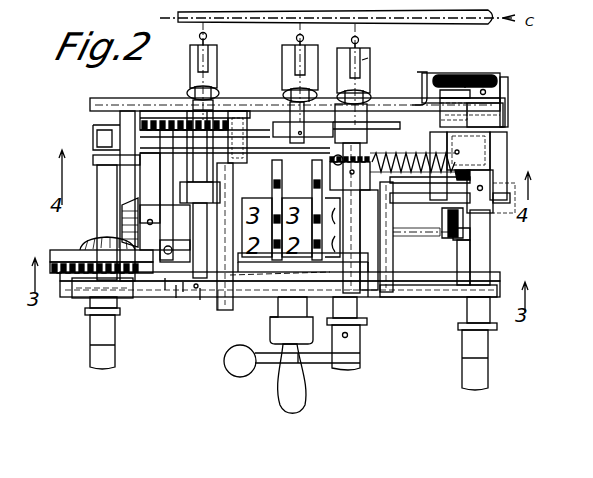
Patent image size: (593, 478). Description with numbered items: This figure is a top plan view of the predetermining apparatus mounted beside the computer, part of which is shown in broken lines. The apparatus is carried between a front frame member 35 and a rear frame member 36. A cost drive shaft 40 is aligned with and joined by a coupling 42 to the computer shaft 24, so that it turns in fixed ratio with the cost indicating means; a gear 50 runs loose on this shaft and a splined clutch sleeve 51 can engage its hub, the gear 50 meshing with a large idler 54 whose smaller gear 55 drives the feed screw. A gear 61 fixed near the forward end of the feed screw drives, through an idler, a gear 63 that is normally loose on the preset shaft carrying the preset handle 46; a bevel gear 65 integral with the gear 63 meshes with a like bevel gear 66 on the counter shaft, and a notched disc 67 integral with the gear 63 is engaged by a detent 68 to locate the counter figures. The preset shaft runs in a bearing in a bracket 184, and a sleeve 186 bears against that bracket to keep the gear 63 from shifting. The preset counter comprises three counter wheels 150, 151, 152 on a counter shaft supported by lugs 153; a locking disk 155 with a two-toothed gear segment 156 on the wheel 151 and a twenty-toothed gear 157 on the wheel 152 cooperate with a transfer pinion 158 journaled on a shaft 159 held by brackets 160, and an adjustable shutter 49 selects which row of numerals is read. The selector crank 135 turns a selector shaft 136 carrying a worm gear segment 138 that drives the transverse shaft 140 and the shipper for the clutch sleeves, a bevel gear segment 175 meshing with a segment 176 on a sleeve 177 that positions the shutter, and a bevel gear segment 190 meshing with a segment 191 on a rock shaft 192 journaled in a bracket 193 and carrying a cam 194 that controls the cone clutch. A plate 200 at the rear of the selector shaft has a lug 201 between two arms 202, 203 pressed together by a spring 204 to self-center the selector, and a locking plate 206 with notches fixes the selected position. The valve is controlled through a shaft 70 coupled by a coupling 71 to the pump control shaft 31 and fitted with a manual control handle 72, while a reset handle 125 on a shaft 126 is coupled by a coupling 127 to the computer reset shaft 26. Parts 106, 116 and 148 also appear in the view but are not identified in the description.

The shaft 24 is at (207, 37).
The coupling 42 is at (222, 56).
The drive shaft 40 is at (199, 89).
The gear 50 is at (212, 118).
The reset shaft 26 is at (300, 34).
The coupling 127 is at (311, 64).
The shaft 126 is at (301, 100).
The control shaft 31 is at (355, 36).
The coupling 71 is at (365, 66).
The shaft 70 is at (366, 94).
The locking plate 206 is at (375, 128).
The lug 201 is at (446, 76).
The plate 200 is at (464, 76).
The spring 204 is at (485, 78).
The arm 202 is at (424, 96).
The arm 203 is at (504, 100).
The rear frame member 36 is at (506, 118).
The large idler 54 is at (148, 112).
The gear 55 is at (160, 118).
The rock shaft 192 is at (108, 128).
The cam 194 is at (98, 138).
The bracket 184 is at (96, 157).
The sleeve 186 is at (100, 196).
The bevel gear 66 is at (122, 218).
The bevel gear 65 is at (85, 242).
The notched disc 67 is at (63, 258).
The gear 63 is at (70, 272).
The preset handle 46 is at (92, 337).
The front frame member 35 is at (497, 302).
The selector handle 135 is at (486, 350).
The spring 116 is at (420, 160).
The shaft 159 is at (382, 183).
The transverse shaft 140 is at (434, 203).
The bevel gear segment 191 is at (456, 176).
The bracket 193 is at (445, 148).
The bevel gear segment 190 is at (470, 178).
The worm gear segment 138 is at (515, 198).
The bevel gear segment 175 is at (465, 216).
The bevel gear segment 176 is at (470, 236).
The sleeve 177 is at (437, 240).
The selector shaft 136 is at (480, 265).
The transfer pinion 158 is at (286, 132).
The spring seat 106 is at (300, 160).
The twenty-toothed gear 157 is at (262, 196).
The clutch sleeve 51 is at (213, 175).
The two-toothed gear segment 156 is at (278, 285).
The locking disk 155 is at (275, 303).
The counter wheel 151 is at (270, 320).
The manual control handle 72 is at (234, 368).
The reset handle 125 is at (285, 405).
The counter wheel 150 is at (355, 285).
The adjustable sign shutter 49 is at (378, 290).
The brackets 160 is at (222, 288).
The gear 61 is at (200, 290).
The detent 68 is at (178, 290).
The rod 148 is at (186, 283).
The lugs 153 is at (168, 282).
The counter wheel 152 is at (252, 292).